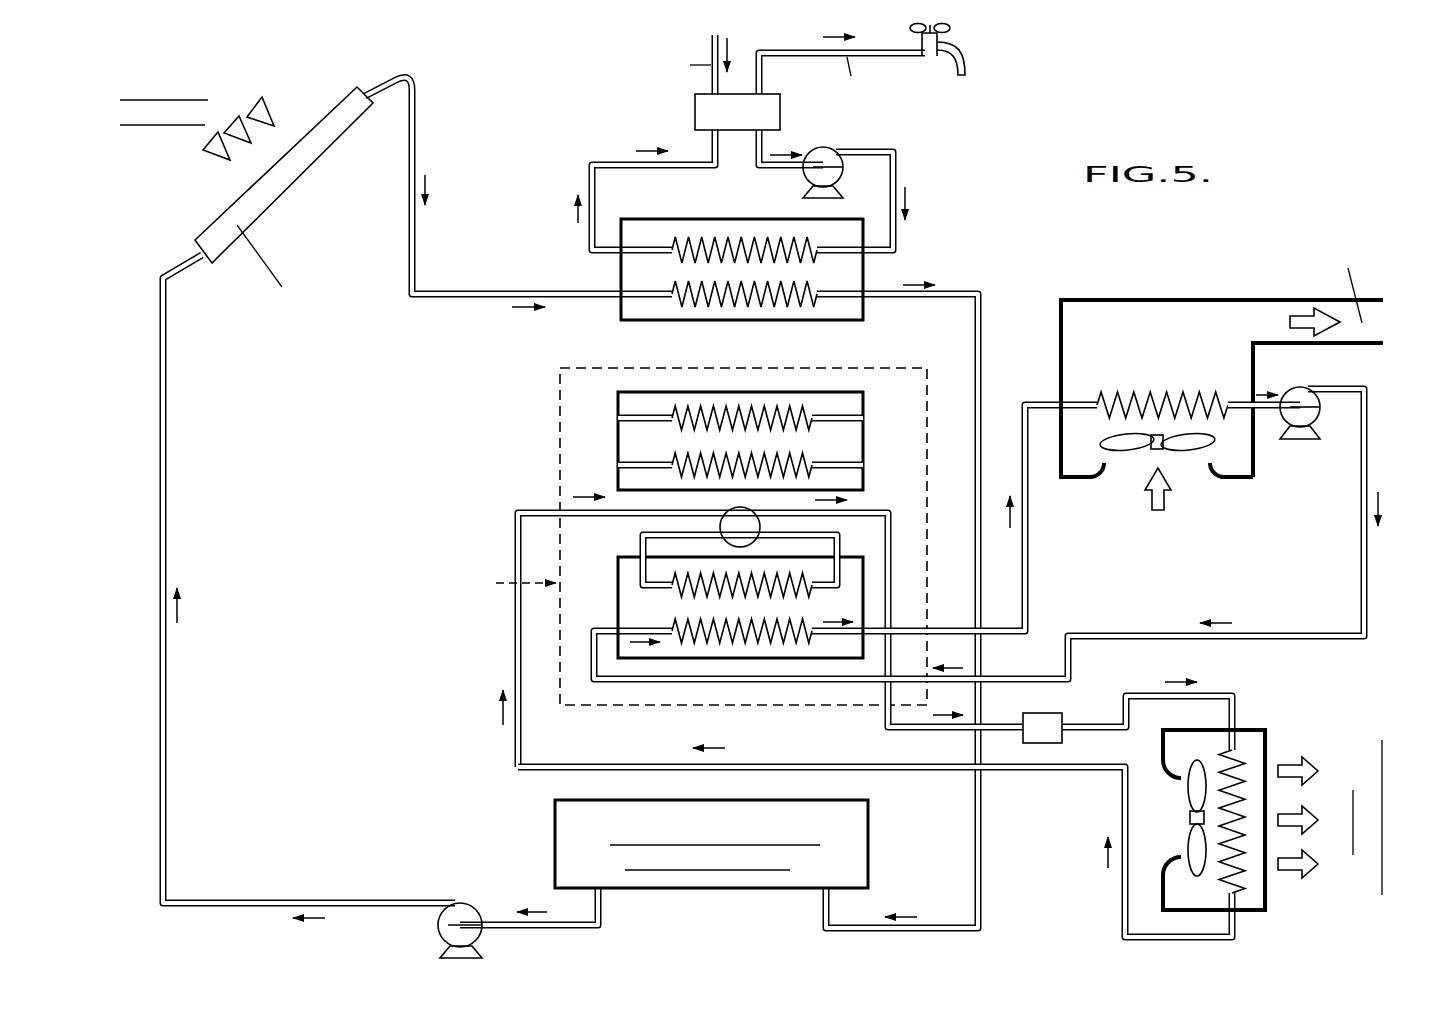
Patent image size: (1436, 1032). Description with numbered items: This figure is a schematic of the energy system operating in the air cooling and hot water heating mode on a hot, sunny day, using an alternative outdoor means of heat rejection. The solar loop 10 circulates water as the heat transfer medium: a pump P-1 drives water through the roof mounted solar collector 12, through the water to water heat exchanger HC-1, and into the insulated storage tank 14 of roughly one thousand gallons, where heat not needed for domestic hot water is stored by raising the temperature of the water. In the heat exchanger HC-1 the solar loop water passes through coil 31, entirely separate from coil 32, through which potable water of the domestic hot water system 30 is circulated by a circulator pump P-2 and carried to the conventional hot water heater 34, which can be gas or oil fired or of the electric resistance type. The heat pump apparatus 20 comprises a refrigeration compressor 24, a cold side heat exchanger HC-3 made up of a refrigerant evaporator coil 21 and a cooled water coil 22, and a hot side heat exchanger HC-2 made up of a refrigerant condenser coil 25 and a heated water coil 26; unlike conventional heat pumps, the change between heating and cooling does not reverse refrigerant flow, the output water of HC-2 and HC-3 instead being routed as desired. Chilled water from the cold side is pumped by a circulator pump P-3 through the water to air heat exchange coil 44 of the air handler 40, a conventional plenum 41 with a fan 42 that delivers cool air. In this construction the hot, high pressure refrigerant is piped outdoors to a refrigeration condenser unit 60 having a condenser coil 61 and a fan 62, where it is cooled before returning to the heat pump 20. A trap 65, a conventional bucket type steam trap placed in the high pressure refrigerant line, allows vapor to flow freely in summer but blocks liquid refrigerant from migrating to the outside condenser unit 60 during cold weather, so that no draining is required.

The solar loop 10 is at (172, 432).
The solar collector 12 is at (303, 160).
The storage tank 14 is at (567, 825).
The heat pump apparatus 20 is at (556, 658).
The refrigerant evaporator coil 21 is at (680, 580).
The cooled water coil 22 is at (680, 626).
The refrigeration compressor 24 is at (740, 527).
The refrigerant condenser coil 25 is at (740, 451).
The heated water coil 26 is at (765, 412).
The domestic hot water heater 30 is at (692, 110).
The coil 31 is at (712, 300).
The coil 32 is at (735, 242).
The hot water heater 34 is at (754, 124).
The air handler 40 is at (1199, 393).
The plenum 41 is at (1255, 365).
The fan 42 is at (1108, 442).
The water to air heat exchange coil 44 is at (1157, 394).
The refrigeration condenser unit 60 is at (1202, 802).
The condenser coil 61 is at (1242, 868).
The fan 62 is at (1193, 797).
The trap 65 is at (1047, 728).
The pump P-1 is at (460, 905).
The circulator pump P-2 is at (819, 158).
The circulator pump P-3 is at (1300, 440).
The water to water heat exchanger HC-1 is at (689, 267).
The hot side heat exchanger HC-2 is at (670, 410).
The cold side heat exchanger HC-3 is at (986, 564).